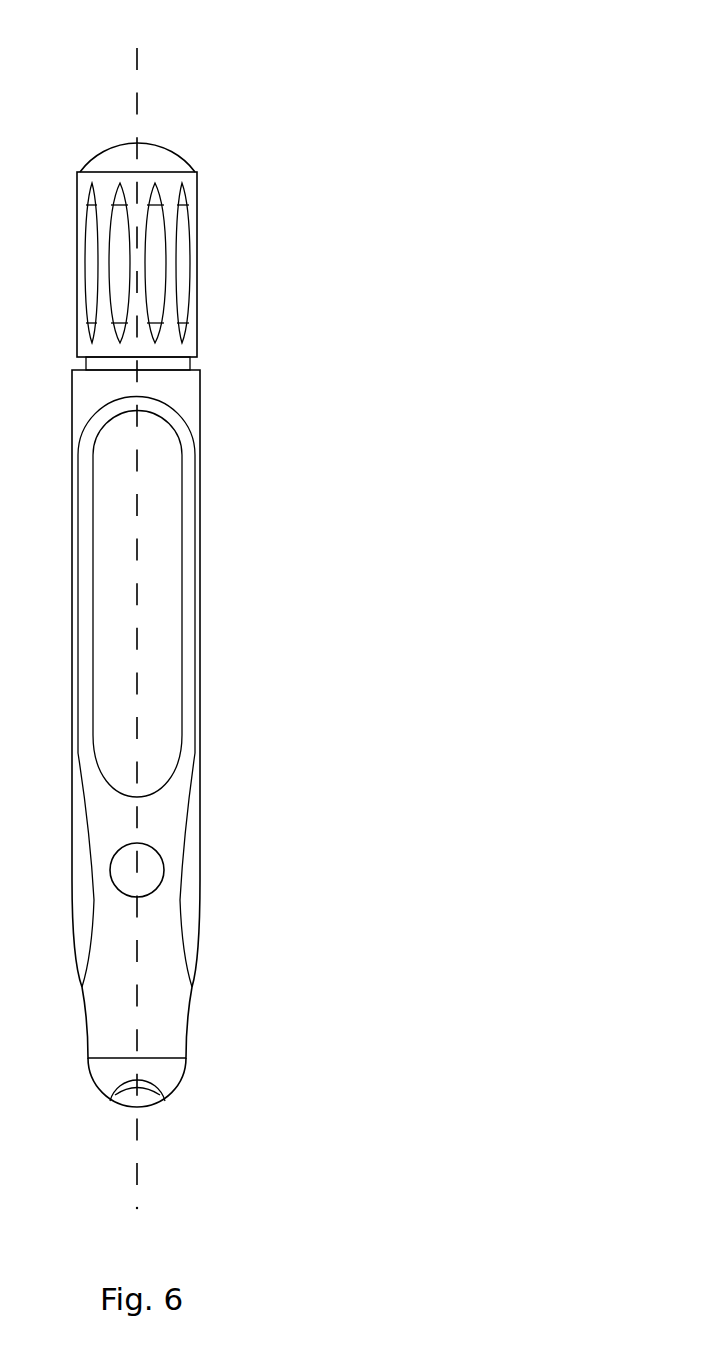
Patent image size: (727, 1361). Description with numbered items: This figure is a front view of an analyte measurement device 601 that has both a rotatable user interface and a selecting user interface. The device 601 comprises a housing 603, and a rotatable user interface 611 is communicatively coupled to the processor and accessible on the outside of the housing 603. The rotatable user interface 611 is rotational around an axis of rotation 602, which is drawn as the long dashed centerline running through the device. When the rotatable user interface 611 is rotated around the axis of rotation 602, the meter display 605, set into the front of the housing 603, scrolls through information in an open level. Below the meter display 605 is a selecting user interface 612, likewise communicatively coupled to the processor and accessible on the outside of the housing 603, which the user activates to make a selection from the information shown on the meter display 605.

The analyte measurement device 601 is at (281, 555).
The axis of rotation 602 is at (138, 110).
The housing 603 is at (155, 975).
The meter display 605 is at (165, 560).
The rotatable user interface 611 is at (167, 292).
The selecting user interface 612 is at (150, 870).